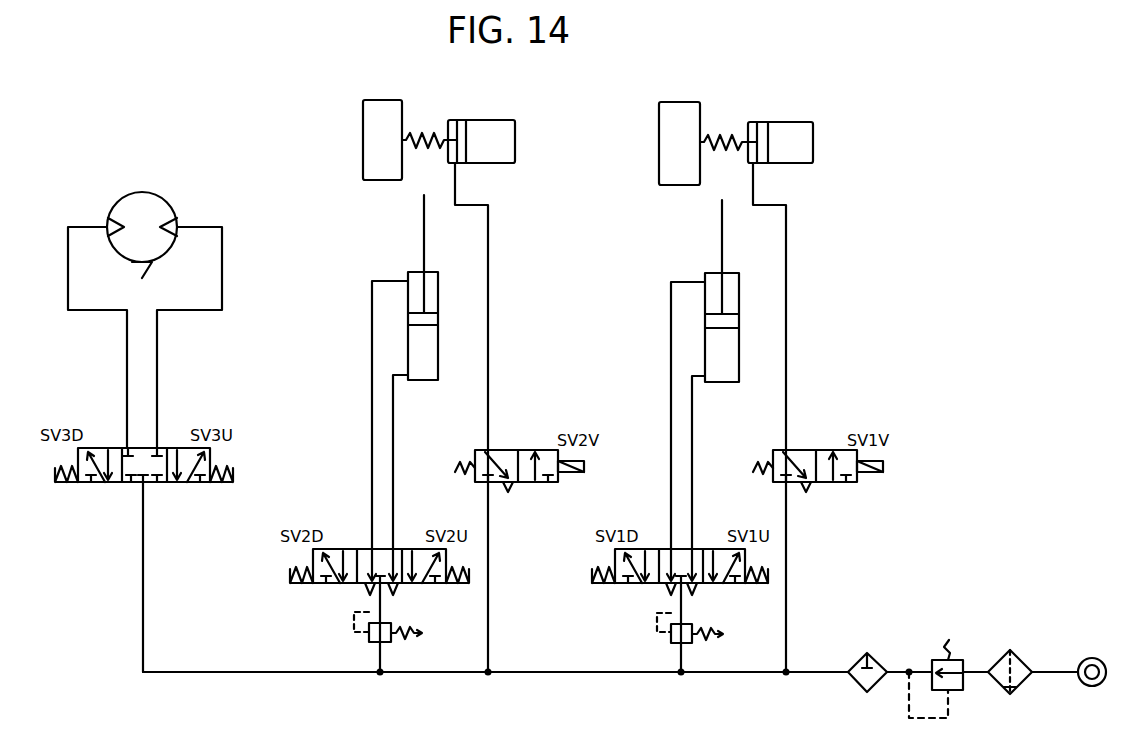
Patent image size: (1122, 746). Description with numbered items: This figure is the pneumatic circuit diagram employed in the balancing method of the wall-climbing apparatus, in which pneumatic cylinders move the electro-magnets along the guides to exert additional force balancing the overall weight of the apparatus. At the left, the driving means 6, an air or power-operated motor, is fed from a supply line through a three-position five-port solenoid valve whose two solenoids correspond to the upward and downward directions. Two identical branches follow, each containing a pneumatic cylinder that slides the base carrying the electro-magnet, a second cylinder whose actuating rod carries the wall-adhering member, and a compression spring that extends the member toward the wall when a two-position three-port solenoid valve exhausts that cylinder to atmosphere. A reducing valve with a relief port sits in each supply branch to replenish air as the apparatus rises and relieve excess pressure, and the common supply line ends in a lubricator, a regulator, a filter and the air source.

The driving means 6 is at (174, 207).